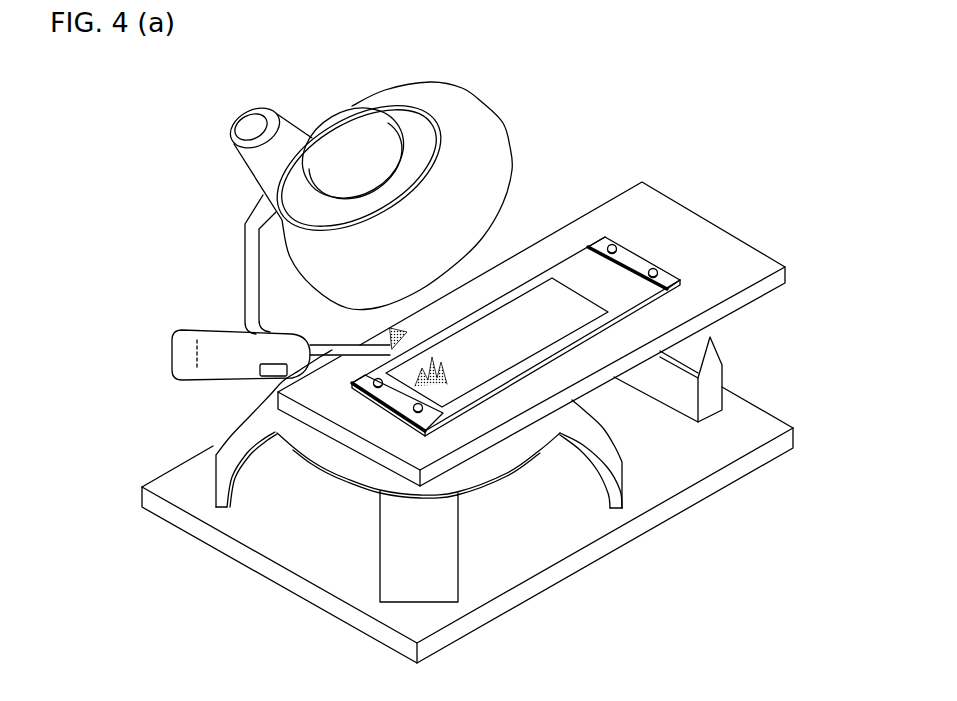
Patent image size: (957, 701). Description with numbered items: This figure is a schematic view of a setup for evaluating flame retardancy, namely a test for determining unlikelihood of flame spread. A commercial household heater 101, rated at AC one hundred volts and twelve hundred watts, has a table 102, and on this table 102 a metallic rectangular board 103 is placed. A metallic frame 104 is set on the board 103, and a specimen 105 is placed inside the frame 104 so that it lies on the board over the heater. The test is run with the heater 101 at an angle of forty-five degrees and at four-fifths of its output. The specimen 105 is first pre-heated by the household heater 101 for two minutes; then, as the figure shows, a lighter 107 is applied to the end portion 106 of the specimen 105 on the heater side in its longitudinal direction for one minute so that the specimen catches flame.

The household heater 101 is at (483, 113).
The table 102 is at (330, 465).
The metallic rectangular board 103 is at (740, 258).
The metallic frame 104 is at (631, 263).
The specimen 105 is at (545, 340).
The end portion 106 is at (437, 423).
The lighter 107 is at (183, 345).